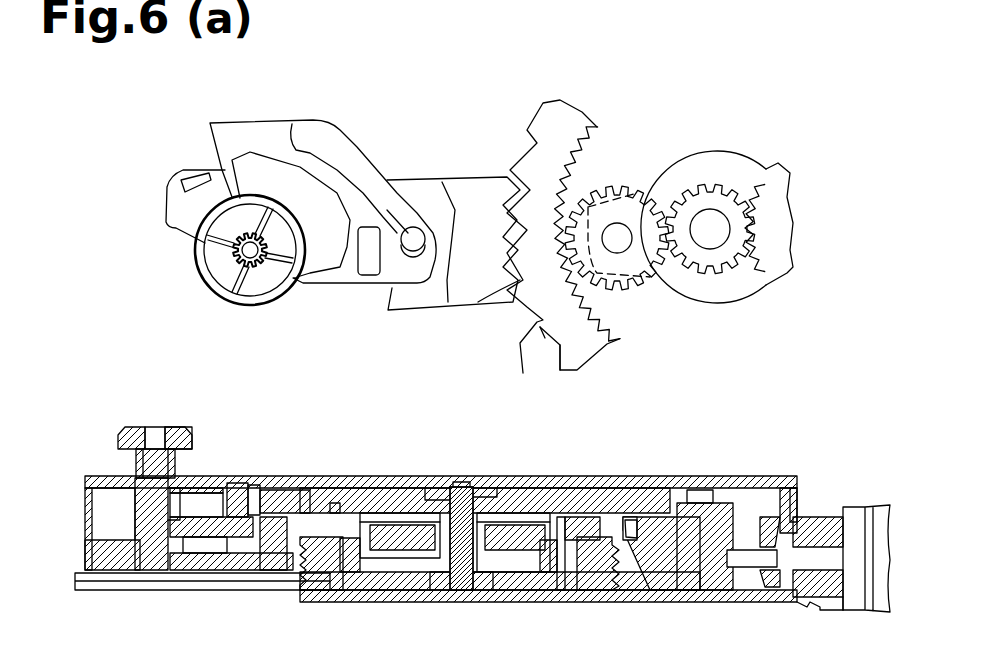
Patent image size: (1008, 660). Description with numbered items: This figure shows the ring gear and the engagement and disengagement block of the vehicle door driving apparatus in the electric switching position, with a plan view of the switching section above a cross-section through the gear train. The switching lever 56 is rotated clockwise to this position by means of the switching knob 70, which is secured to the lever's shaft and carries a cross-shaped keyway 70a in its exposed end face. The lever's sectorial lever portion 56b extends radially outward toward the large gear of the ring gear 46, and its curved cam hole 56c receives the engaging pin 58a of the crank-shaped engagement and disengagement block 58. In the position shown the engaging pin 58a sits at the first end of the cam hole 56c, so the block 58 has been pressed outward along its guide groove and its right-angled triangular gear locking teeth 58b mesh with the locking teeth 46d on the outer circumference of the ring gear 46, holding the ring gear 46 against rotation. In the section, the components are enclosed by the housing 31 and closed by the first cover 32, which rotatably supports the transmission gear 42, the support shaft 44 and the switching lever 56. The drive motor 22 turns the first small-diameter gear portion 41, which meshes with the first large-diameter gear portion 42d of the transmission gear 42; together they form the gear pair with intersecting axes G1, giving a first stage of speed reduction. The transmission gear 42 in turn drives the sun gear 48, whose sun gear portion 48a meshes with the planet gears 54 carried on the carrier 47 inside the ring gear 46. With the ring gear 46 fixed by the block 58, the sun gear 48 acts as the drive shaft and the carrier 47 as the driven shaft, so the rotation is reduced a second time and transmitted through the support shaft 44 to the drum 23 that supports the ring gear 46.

The drive motor 22 is at (875, 512).
The drum 23 is at (322, 590).
The housing 31 is at (853, 603).
The first cover 32 is at (100, 478).
The first small-diameter gear portion 41 is at (768, 517).
The transmission gear 42 is at (720, 490).
The first large-diameter gear portion 42d is at (795, 490).
The support shaft 44 is at (462, 483).
The ring gear 46 is at (580, 113).
The locking teeth 46d is at (553, 335).
The carrier 47 is at (405, 513).
The sun gear 48 is at (540, 488).
The sun gear portion 48a is at (712, 188).
The planet gears 54 is at (610, 190).
The switching lever 56 is at (347, 130).
The lever portion 56b is at (210, 490).
The cam hole 56c is at (275, 122).
The engagement and disengagement block 58 is at (466, 180).
The engaging pin 58a is at (411, 230).
The gear locking teeth 58b is at (492, 300).
The switching knob 70 is at (205, 272).
The keyway 70a is at (172, 428).
The gear pair with intersecting axes G1 is at (862, 435).